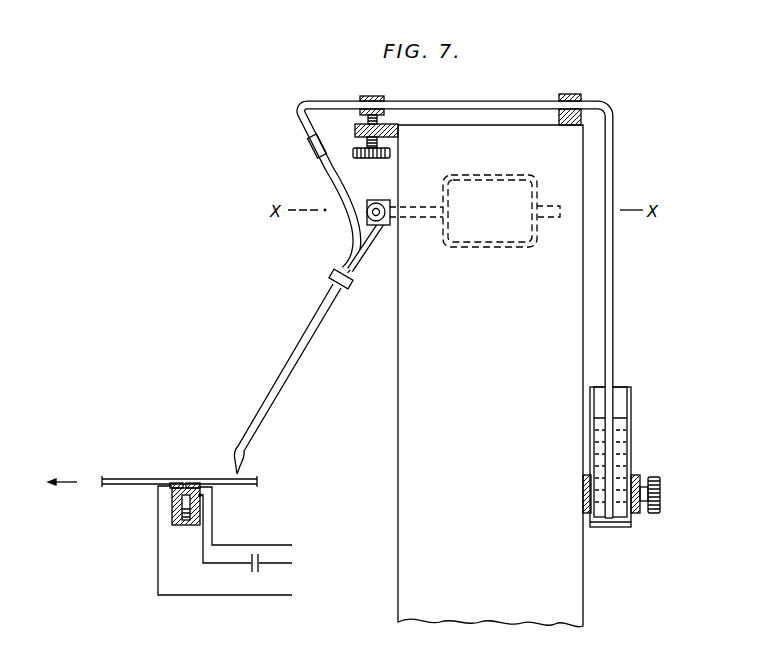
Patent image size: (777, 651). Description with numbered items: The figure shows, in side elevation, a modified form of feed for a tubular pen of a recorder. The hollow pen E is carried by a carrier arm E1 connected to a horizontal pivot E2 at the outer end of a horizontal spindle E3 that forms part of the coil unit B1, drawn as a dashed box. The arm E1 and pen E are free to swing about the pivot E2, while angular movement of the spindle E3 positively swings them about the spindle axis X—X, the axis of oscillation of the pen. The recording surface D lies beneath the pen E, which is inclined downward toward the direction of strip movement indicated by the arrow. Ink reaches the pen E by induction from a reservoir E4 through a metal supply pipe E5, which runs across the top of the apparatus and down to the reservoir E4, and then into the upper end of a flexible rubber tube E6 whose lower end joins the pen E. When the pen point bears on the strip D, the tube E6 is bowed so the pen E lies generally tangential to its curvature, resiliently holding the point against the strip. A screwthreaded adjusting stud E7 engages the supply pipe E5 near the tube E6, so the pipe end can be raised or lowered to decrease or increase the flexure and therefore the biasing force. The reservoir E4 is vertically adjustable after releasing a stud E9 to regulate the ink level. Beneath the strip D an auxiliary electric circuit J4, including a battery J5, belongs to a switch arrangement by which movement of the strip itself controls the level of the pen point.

The pen E is at (268, 405).
The carrier arm E1 is at (353, 280).
The horizontal pivot E2 is at (378, 206).
The horizontal spindle E3 is at (411, 206).
The reservoir E4 is at (628, 437).
The metal supply pipe E5 is at (445, 102).
The flexible rubber tube E6 is at (323, 167).
The screwthreaded adjusting stud E7 is at (353, 148).
The stud E9 is at (653, 477).
The coil unit B1 is at (471, 177).
The recording surface D is at (128, 479).
The auxiliary electric circuit J4 is at (285, 536).
The battery J5 is at (264, 568).